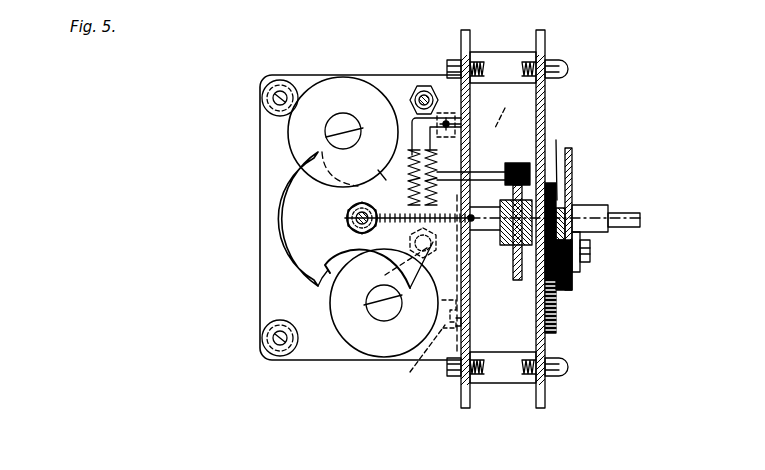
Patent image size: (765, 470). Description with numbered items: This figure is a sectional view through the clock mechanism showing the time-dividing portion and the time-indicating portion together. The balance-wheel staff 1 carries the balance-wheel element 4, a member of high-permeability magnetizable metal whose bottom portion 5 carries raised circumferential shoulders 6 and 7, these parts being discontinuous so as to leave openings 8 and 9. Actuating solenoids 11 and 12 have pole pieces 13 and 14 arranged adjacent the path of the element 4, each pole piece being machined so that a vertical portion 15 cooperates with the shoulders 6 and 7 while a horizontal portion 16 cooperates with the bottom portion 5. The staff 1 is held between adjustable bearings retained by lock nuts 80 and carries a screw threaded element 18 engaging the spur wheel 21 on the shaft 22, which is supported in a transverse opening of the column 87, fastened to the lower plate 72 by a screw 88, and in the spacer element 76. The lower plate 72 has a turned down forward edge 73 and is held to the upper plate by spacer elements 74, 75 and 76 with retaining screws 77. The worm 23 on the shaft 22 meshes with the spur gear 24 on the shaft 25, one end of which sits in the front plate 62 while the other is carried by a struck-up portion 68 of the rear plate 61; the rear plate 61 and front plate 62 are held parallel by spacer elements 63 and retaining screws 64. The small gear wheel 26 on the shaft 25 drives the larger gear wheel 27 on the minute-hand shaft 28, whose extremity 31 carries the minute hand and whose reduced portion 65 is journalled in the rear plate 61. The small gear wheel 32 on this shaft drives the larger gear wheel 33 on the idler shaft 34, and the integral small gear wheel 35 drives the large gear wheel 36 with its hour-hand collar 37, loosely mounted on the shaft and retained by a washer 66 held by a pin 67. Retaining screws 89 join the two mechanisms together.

The balance-wheel staff 1 is at (375, 206).
The balance-wheel element 4 is at (279, 216).
The bottom portion 5 is at (321, 288).
The raised circumferential shoulder 6 is at (292, 184).
The raised circumferential shoulder 7 is at (431, 262).
The opening 8 is at (384, 172).
The opening 9 is at (345, 258).
The actuating solenoid 11 is at (348, 80).
The actuating solenoid 12 is at (382, 352).
The pole piece 13 is at (341, 120).
The pole piece 14 is at (372, 320).
The vertical portion 15 is at (331, 128).
The horizontal portion 16 is at (356, 136).
The screw threaded element 18 is at (347, 213).
The spur wheel 21 is at (473, 217).
The shaft 22 is at (432, 170).
The worm 23 is at (441, 188).
The spur gear 24 is at (419, 86).
The shaft 25 is at (500, 170).
The small gear wheel 26 is at (518, 163).
The larger gear wheel 27 is at (512, 274).
The shaft 28 is at (499, 236).
The minute hand shaft 31 is at (640, 220).
The small gear wheel 32 is at (562, 160).
The larger gear wheel 33 is at (558, 320).
The idler shaft 34 is at (591, 260).
The small gear wheel 35 is at (558, 288).
The large gear wheel 36 is at (573, 170).
The collar 37 is at (590, 205).
The rear plate 61 is at (470, 32).
The front plate 62 is at (546, 32).
The spacer element 63 is at (500, 42).
The retaining screw 64 is at (452, 62).
The reduced portion 65 is at (492, 210).
The washer 66 is at (573, 282).
The pin 67 is at (581, 243).
The struck-up portion 68 is at (410, 118).
The lower plate 72 is at (262, 335).
The turned down forward edge 73 is at (463, 322).
The spacer element 74 is at (278, 80).
The spacer element 75 is at (272, 357).
The spacer element 76 is at (460, 106).
The retaining screw 77 is at (456, 125).
The lock nut 80 is at (349, 228).
The column 87 is at (412, 243).
The screw 88 is at (401, 261).
The retaining screw 89 is at (462, 241).